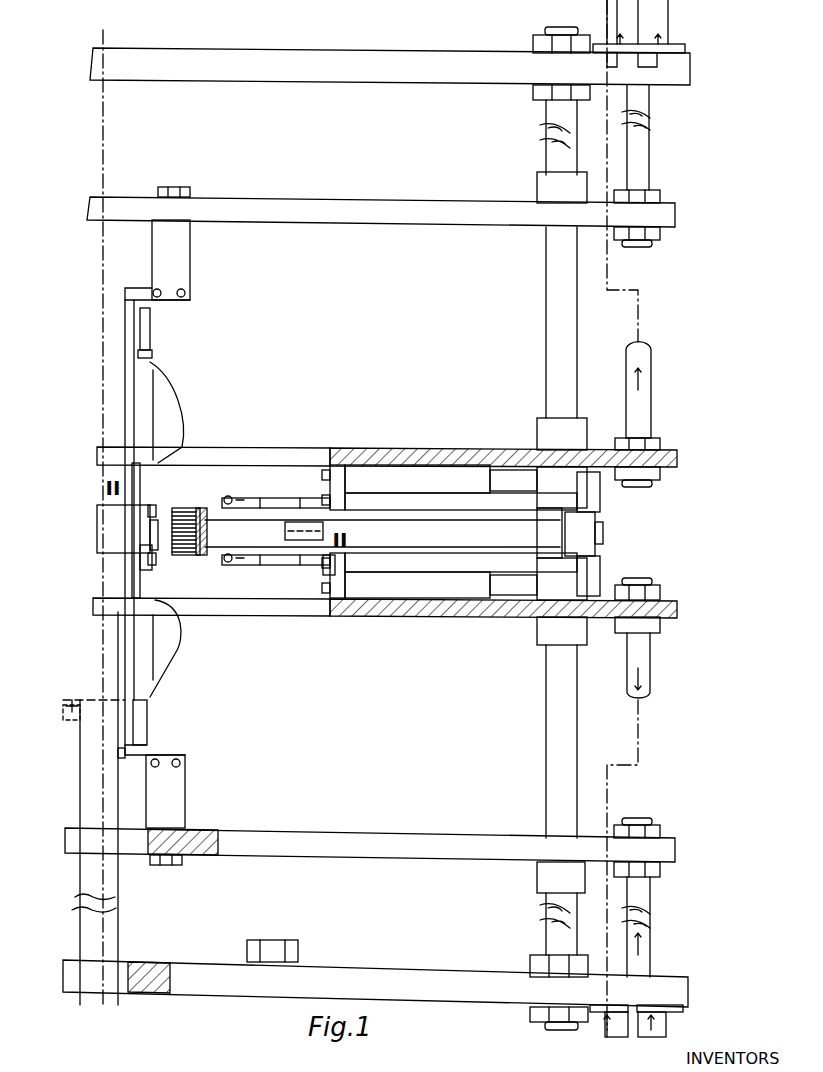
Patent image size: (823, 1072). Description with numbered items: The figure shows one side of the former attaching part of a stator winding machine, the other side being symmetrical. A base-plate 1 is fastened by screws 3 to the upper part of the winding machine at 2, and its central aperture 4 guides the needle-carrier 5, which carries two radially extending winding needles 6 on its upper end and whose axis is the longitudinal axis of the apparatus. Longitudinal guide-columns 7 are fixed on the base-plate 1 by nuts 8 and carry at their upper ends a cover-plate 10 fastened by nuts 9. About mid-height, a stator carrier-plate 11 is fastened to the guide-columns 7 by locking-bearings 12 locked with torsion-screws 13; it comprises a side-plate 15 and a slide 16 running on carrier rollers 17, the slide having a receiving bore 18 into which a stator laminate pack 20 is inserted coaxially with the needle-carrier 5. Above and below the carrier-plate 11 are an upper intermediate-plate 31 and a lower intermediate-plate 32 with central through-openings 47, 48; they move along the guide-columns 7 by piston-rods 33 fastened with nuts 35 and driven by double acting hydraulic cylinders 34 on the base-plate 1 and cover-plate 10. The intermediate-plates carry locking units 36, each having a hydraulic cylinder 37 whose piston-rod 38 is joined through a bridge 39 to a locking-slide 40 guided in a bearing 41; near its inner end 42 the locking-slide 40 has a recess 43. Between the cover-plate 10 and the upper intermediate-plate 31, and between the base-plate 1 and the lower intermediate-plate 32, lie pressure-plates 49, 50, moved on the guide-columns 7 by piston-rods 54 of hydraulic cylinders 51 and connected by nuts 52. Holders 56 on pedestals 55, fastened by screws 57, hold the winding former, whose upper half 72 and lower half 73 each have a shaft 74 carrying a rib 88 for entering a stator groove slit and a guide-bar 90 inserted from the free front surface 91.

The base-plate 1 is at (414, 972).
The upper part of stator winding machine 2 is at (393, 1040).
The screws 3 is at (292, 951).
The central aperture 4 is at (130, 995).
The needle-carrier 5 is at (118, 776).
The winding needles 6 is at (166, 712).
The guide-columns 7 is at (548, 124).
The nuts 8 is at (540, 968).
The nuts 9 is at (540, 47).
The cover-plate 10 is at (348, 51).
The carrier-plate 11 is at (268, 520).
The locking-bearings 12 is at (598, 530).
The torsion-screws 13 is at (603, 544).
The side-plate 15 is at (480, 540).
The slide 16 is at (251, 560).
The carrier rollers 17 is at (285, 530).
The receiving bore 18 is at (191, 558).
The stator laminate pack 20 is at (199, 508).
The upper intermediate-plate 31 is at (433, 478).
The lower intermediate-plate 32 is at (426, 610).
The piston-rods 33 is at (651, 398).
The double acting hydraulic cylinders 34 is at (607, 14).
The nuts 35 is at (650, 467).
The locking units 36 is at (357, 470).
The double acting hydraulic cylinder 37 is at (393, 478).
The piston-rod 38 is at (522, 478).
The bridge 39 is at (600, 500).
The locking-slide 40 is at (457, 498).
The bearing 41 is at (323, 568).
The inner end 42 is at (234, 492).
The recess 43 is at (246, 502).
The central through-opening 47 is at (336, 450).
The central through-opening 48 is at (340, 616).
The upper pressure-plate 49 is at (422, 203).
The lower pressure-plate 50 is at (372, 842).
The double acting hydraulic cylinders 51 is at (673, 14).
The nuts 52 is at (652, 235).
The piston-rods 54 is at (650, 118).
The pedestals 55 is at (190, 253).
The holders 56 is at (152, 326).
The screws 57 is at (175, 190).
The upper half of winding former 72 is at (172, 390).
The lower half of winding former 73 is at (165, 644).
The shaft 74 is at (140, 515).
The rib 88 is at (158, 508).
The guide-bar 90 is at (138, 560).
The free front surface 91 is at (152, 526).